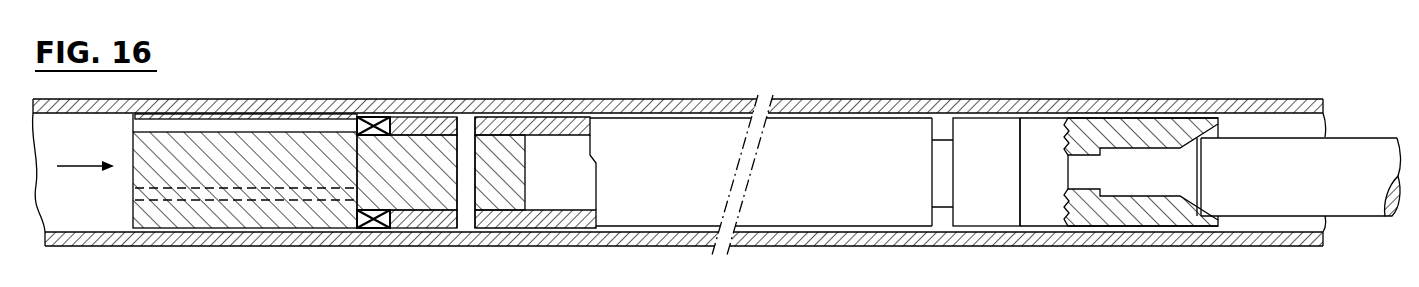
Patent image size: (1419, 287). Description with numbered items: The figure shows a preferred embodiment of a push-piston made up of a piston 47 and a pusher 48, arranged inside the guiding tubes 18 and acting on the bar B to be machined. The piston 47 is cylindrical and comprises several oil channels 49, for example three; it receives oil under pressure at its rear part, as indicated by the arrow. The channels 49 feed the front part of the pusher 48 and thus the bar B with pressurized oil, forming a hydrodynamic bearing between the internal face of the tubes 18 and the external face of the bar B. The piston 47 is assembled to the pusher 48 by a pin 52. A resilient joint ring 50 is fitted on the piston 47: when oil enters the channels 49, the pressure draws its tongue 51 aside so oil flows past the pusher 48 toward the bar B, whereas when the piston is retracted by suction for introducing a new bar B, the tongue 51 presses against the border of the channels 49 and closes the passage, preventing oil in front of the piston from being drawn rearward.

The tubes 18 is at (630, 103).
The piston 47 is at (288, 208).
The pusher 48 is at (625, 212).
The oil channels 49 is at (215, 127).
The resilient joint ring 50 is at (386, 139).
The tongue 51 is at (363, 121).
The pin 52 is at (466, 194).
The bar B is at (1350, 160).